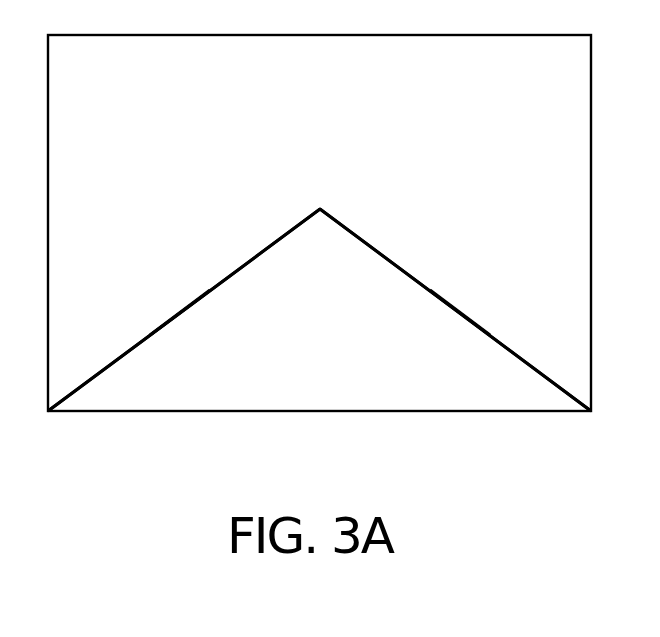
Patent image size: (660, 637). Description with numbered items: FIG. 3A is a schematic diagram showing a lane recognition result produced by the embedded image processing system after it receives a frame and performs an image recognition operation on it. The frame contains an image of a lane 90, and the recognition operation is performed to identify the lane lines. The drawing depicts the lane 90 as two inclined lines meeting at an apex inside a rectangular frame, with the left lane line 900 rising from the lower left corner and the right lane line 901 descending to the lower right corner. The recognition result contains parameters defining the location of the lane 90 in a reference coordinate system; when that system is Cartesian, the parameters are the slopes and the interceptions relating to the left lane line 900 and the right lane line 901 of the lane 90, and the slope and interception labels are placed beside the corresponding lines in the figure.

The lane 90 is at (284, 193).
The left inclined surface 900 is at (243, 267).
The right inclined surface 901 is at (417, 283).